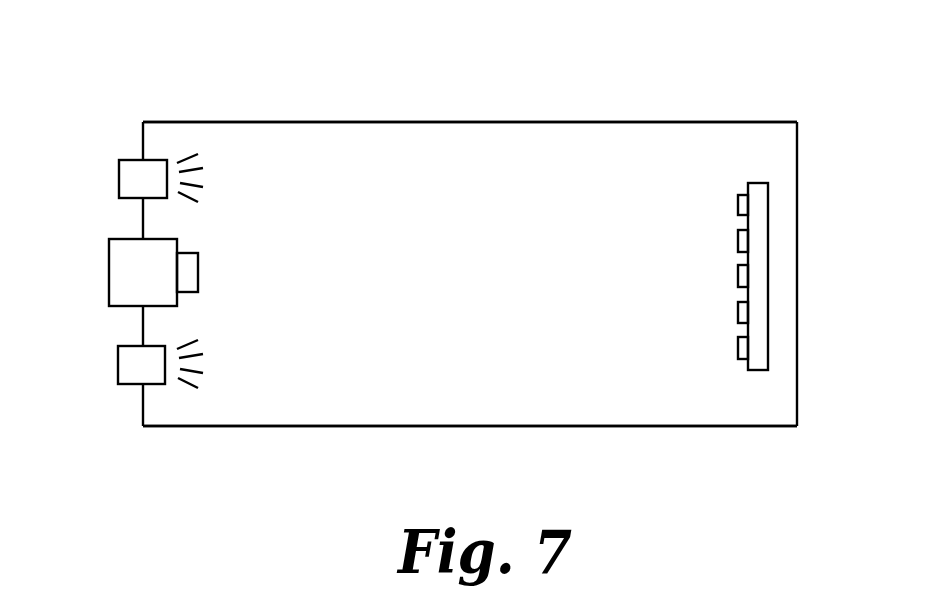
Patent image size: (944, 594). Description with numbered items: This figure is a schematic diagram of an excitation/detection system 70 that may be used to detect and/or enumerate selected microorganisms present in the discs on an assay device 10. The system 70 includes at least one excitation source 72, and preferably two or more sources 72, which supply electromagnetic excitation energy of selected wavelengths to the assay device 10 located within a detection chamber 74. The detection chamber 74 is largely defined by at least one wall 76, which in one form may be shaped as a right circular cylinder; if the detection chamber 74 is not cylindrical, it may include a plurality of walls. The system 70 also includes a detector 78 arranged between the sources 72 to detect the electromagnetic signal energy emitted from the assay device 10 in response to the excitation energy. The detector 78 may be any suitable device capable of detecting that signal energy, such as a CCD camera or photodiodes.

The assay device 10 is at (763, 217).
The excitation/detection system 70 is at (792, 83).
The excitation source 72 is at (133, 180).
The detection chamber 74 is at (543, 410).
The wall 76 is at (509, 122).
The detector 78 is at (130, 275).